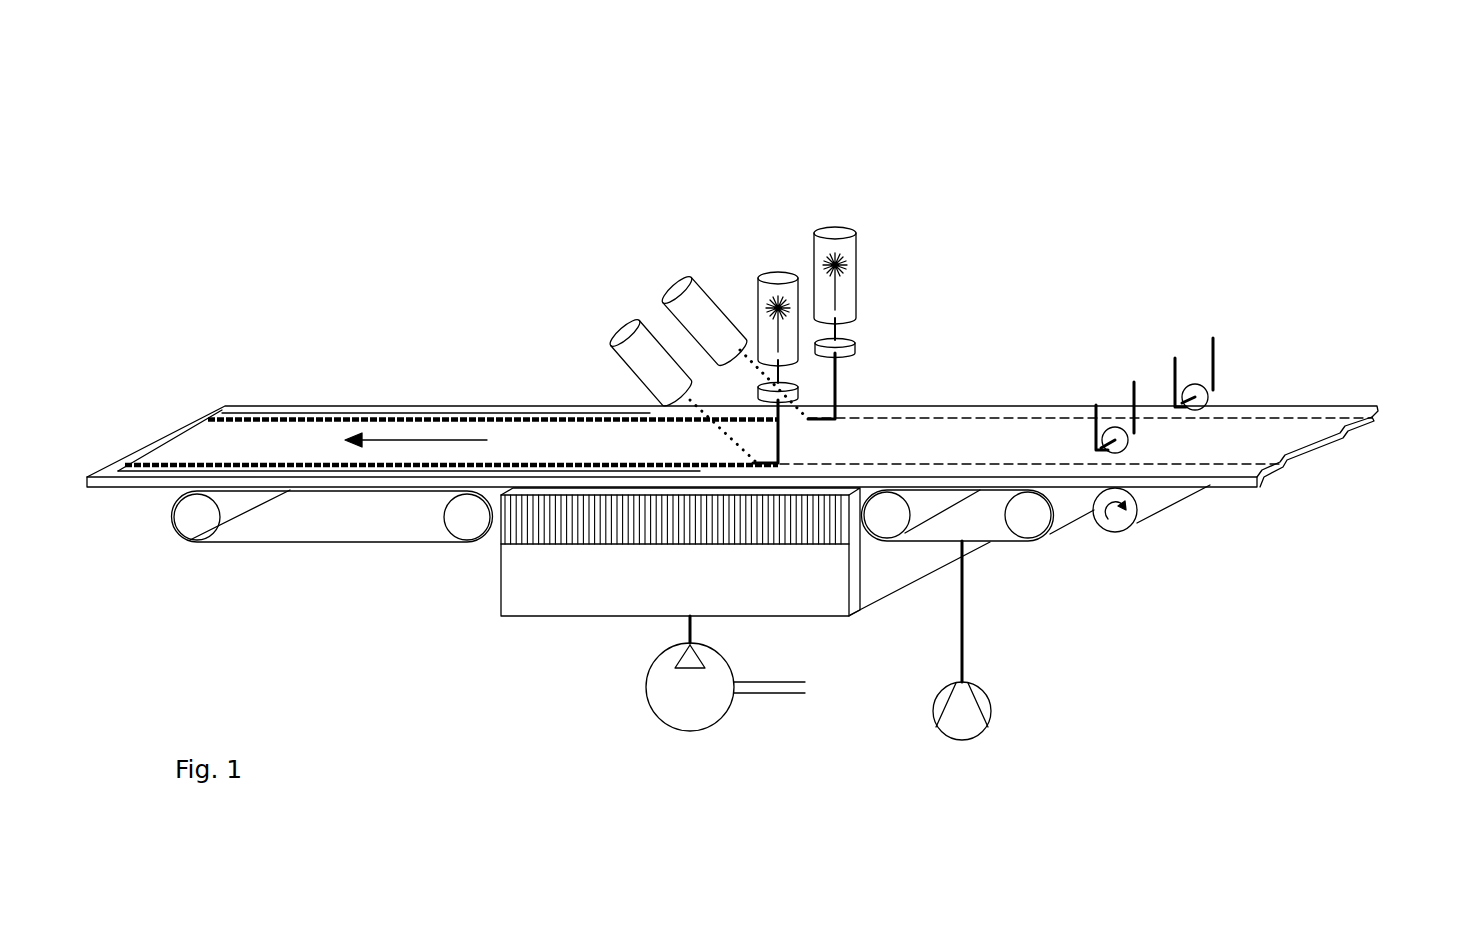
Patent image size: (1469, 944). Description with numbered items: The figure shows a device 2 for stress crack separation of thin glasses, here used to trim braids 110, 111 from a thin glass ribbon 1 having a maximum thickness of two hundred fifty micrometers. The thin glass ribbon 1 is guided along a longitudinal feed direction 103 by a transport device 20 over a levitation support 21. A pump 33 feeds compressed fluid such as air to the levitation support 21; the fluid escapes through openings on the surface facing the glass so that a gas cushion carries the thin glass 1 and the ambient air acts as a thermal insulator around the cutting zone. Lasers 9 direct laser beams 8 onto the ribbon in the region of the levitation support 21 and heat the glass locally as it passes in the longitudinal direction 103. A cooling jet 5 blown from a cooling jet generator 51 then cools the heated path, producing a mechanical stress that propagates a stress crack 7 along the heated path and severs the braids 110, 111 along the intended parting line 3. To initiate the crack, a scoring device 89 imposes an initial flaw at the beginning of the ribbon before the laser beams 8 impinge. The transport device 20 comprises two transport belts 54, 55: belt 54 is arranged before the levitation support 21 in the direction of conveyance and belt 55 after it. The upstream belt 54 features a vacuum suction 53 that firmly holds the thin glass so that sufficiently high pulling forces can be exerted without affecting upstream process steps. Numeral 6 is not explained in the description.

The thin glass ribbon 1 is at (1342, 406).
The device 2 is at (976, 254).
The intended parting line 3 is at (970, 463).
The cooling jet 5 is at (713, 423).
The laser optics 6 is at (798, 383).
The stress crack 7 is at (552, 466).
The laser beams 8 is at (781, 438).
The lasers 9 is at (777, 277).
The transport device 20 is at (332, 599).
The levitation support 21 is at (512, 490).
The pump 33 is at (646, 685).
The cooling jet generator 51 is at (680, 286).
The vacuum suction 53 is at (993, 710).
The transport belt 54 is at (898, 542).
The transport belt 55 is at (253, 543).
The scoring device 89 is at (1110, 428).
The longitudinal feed direction 103 is at (575, 420).
The braid 110 is at (252, 417).
The braid 111 is at (165, 473).